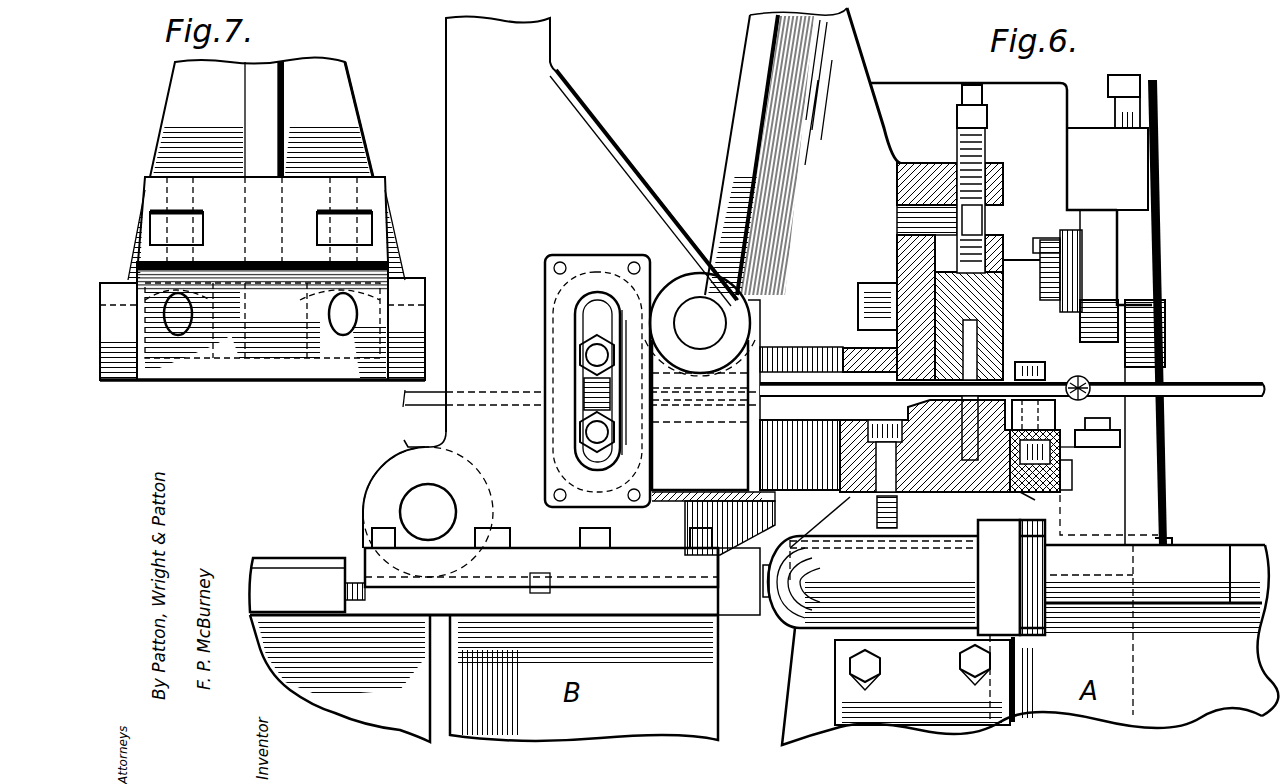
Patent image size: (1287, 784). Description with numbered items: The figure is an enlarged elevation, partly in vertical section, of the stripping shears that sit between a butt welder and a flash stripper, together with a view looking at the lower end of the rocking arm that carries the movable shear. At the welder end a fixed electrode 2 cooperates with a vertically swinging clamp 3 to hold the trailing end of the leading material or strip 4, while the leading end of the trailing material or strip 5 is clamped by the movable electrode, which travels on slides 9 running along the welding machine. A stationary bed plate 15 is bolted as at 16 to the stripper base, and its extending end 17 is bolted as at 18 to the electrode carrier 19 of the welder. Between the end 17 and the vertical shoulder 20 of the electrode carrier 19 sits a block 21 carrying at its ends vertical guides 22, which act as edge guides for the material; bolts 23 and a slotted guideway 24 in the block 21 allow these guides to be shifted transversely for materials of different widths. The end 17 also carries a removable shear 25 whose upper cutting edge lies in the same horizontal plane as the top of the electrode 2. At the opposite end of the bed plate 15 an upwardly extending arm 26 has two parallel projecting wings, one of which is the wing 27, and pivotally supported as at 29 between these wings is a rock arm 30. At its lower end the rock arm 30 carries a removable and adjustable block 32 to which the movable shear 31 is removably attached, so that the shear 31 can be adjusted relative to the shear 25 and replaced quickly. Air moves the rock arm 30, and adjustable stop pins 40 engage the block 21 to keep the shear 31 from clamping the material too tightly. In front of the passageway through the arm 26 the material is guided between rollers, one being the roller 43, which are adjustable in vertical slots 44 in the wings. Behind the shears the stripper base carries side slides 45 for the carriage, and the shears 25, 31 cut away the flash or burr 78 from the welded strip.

In FIG. 6, the fixed electrode 2 is at (1160, 410).
In FIG. 6, the vertically swinging clamp 3 is at (1009, 187).
In FIG. 6, the leading material or strip 4 is at (576, 419).
In FIG. 6, the trailing material or strip 5 is at (1200, 392).
In FIG. 6, the slides 9 is at (1253, 562).
In FIG. 6, the stationary bed plate 15 is at (748, 463).
In FIG. 6, the bolts 16 is at (578, 524).
In FIG. 6, the extending end of bed plate 17 is at (900, 510).
In FIG. 6, the bolts 18 is at (842, 440).
In FIG. 6, the electrode carrier 19 is at (1143, 510).
In FIG. 6, the vertical shoulder 20 is at (1065, 442).
In FIG. 6, the block 21 is at (1022, 488).
In FIG. 6, the vertical guides 22 is at (1045, 415).
In FIG. 6, the bolts 23 is at (1007, 402).
In FIG. 6, the slotted guideway 24 is at (1065, 480).
In FIG. 6, the removable shear 25 is at (1011, 567).
In FIG. 6, the upwardly extending arm 26 is at (550, 296).
In FIG. 6, the projecting wing 27 is at (633, 186).
In FIG. 6, the pivot 29 is at (722, 318).
In FIG. 7, the rock arm 30 is at (338, 76).
In FIG. 6, the rock arm 30 is at (802, 151).
In FIG. 6, the movable shear 31 is at (1000, 345).
In FIG. 6, the removable and adjustable block 32 is at (1006, 260).
In FIG. 6, the adjustable stop pins 40 is at (990, 106).
In FIG. 6, the roller 43 is at (585, 415).
In FIG. 6, the vertical slots 44 is at (590, 316).
In FIG. 6, the side slides 45 is at (277, 588).
In FIG. 6, the flash or burr 78 is at (1095, 372).